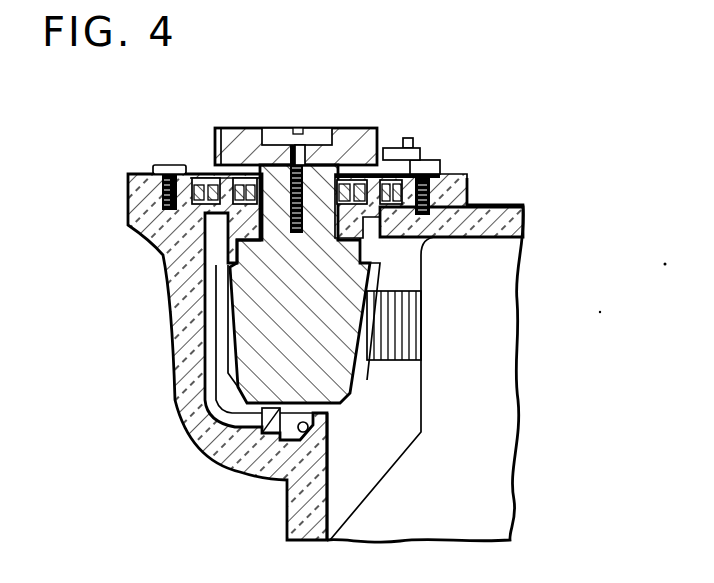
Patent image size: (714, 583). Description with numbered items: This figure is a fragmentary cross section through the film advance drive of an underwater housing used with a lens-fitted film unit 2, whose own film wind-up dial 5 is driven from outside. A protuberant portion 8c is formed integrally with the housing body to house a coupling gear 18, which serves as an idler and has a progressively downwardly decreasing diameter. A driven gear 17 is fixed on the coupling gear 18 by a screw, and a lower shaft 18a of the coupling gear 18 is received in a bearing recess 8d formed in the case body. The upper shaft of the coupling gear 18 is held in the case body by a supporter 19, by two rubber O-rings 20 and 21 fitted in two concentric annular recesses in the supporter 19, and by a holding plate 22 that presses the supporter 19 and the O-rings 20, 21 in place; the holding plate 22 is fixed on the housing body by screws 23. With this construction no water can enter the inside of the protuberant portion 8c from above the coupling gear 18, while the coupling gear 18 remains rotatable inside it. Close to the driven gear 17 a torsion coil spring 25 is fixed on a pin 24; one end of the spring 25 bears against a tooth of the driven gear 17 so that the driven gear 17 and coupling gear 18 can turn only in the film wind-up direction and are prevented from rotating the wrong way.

The lens-fitted film unit 2 is at (497, 298).
The film wind-up dial 5 is at (398, 346).
The protuberant portion 8c is at (198, 430).
The bearing recess 8d is at (313, 430).
The driven gear 17 is at (353, 128).
The coupling gear 18 is at (222, 328).
The lower shaft 18a is at (257, 475).
The supporter 19 is at (204, 248).
The rubber O-ring 20 is at (246, 174).
The rubber O-ring 21 is at (195, 174).
The holding plate 22 is at (192, 172).
The screw 23 is at (437, 172).
The pin 24 is at (408, 138).
The torsion coil spring 25 is at (420, 152).